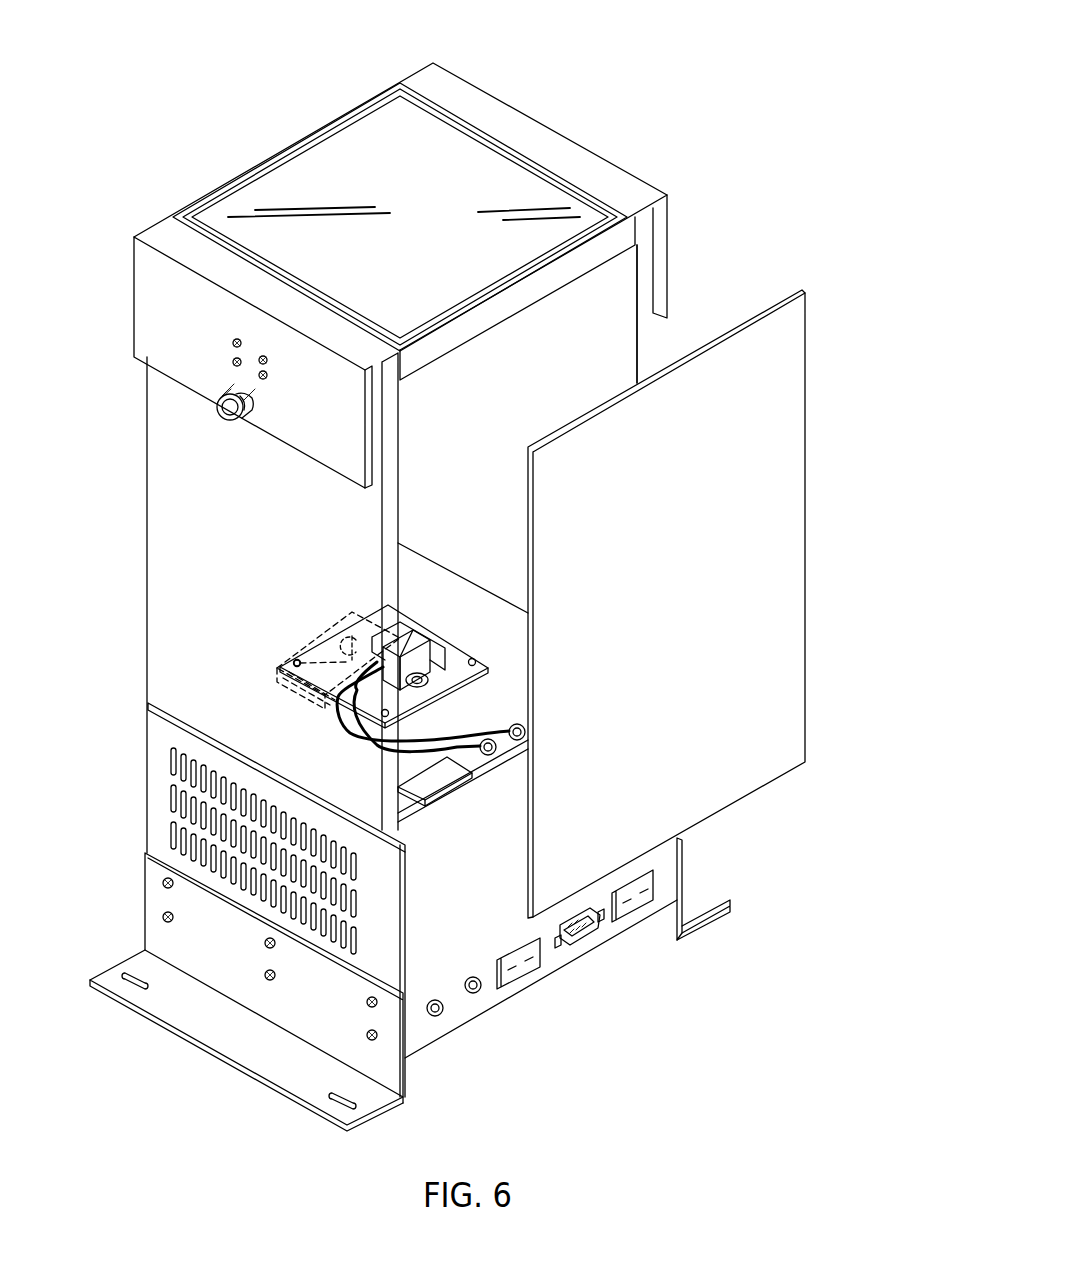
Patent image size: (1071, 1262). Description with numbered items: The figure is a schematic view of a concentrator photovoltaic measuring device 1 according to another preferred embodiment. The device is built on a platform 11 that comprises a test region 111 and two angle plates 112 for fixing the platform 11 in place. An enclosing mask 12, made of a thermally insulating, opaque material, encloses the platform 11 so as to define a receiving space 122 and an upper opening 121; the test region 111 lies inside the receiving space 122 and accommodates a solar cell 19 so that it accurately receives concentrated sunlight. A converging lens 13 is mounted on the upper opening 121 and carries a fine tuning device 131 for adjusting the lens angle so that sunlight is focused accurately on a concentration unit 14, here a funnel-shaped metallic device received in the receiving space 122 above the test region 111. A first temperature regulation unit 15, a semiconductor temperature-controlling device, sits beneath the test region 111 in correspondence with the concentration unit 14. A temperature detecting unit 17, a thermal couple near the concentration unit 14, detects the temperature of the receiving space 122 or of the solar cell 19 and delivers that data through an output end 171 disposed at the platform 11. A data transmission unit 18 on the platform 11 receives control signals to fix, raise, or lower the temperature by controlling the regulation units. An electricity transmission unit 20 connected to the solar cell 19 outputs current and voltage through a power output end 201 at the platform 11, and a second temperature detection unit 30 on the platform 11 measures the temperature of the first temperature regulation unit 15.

The concentrator photovoltaic measuring device 1 is at (640, 121).
The platform 11 is at (505, 993).
The test region 111 is at (350, 660).
The angle plates 112 is at (270, 1065).
The enclosing mask 12 is at (647, 368).
The upper opening 121 is at (616, 258).
The receiving space 122 is at (598, 358).
The converging lens 13 is at (468, 153).
The fine tuning device 131 is at (233, 398).
The concentration unit 14 is at (425, 630).
The first temperature regulation unit 15 is at (280, 668).
The temperature detecting unit 17 is at (417, 780).
The output end 171 is at (523, 967).
The data transmission unit 18 is at (592, 933).
The solar cell 19 is at (293, 663).
The electricity transmission unit 20 is at (527, 728).
The power output end 201 is at (477, 990).
The second temperature detection unit 30 is at (648, 897).